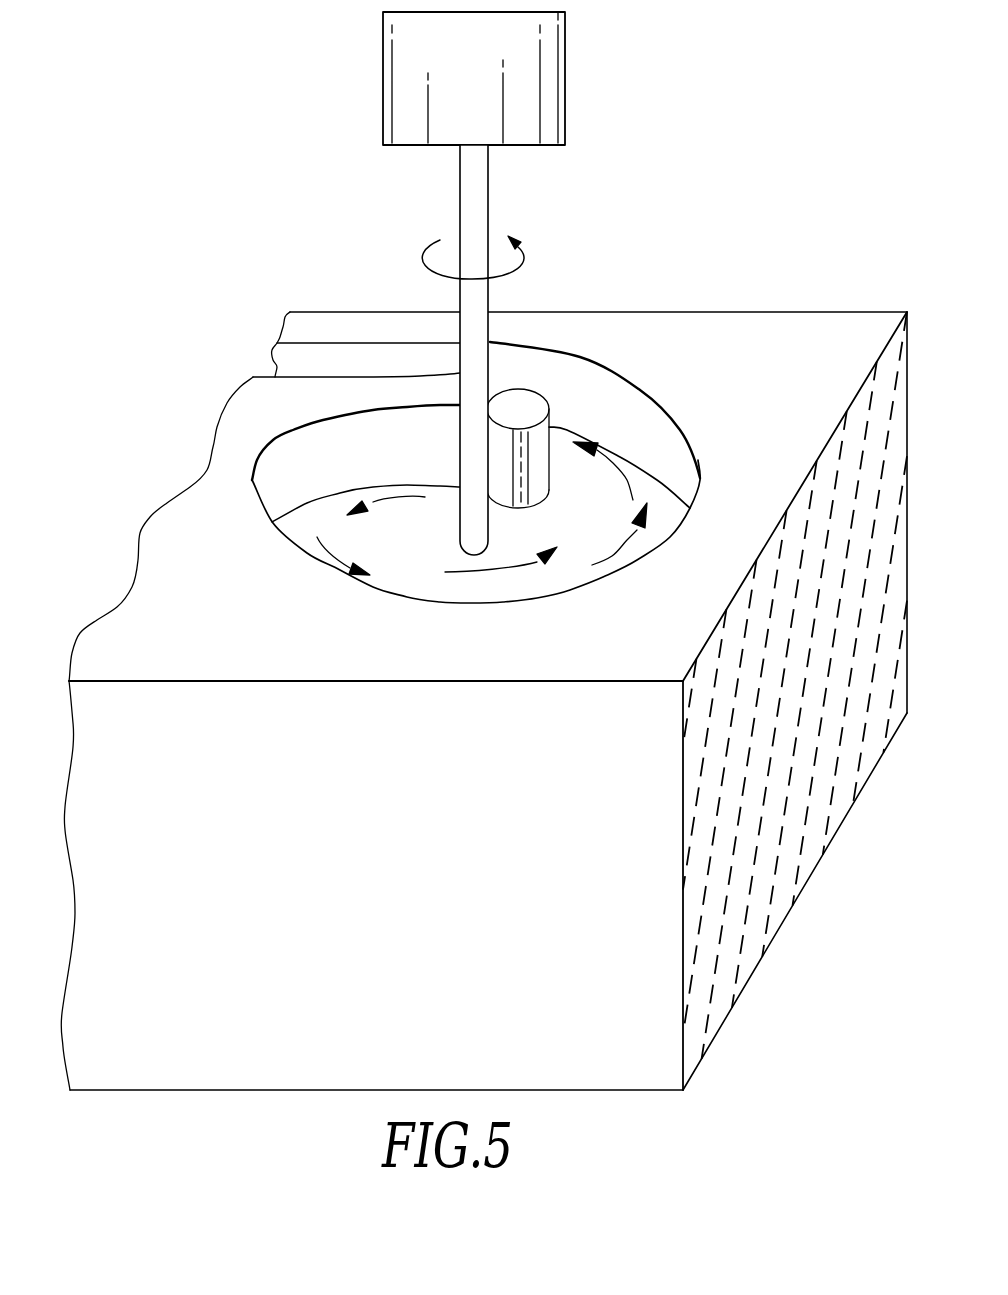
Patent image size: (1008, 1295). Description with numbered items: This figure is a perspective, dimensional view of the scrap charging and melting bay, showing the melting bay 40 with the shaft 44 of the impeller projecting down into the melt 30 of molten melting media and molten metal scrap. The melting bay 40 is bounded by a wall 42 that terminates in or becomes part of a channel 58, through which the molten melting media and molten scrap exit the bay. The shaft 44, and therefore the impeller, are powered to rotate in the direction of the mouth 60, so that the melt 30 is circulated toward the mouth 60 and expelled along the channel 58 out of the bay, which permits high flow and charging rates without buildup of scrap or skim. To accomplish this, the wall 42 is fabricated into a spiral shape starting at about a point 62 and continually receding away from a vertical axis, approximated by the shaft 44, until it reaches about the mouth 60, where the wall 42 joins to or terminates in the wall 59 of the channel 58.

The melt 30 is at (540, 573).
The melting bay 40 is at (705, 420).
The wall 42 is at (297, 463).
The shaft 44 is at (475, 197).
The channel 58 is at (323, 357).
The wall 59 is at (413, 355).
The mouth 60 is at (638, 410).
The point 62 is at (512, 410).